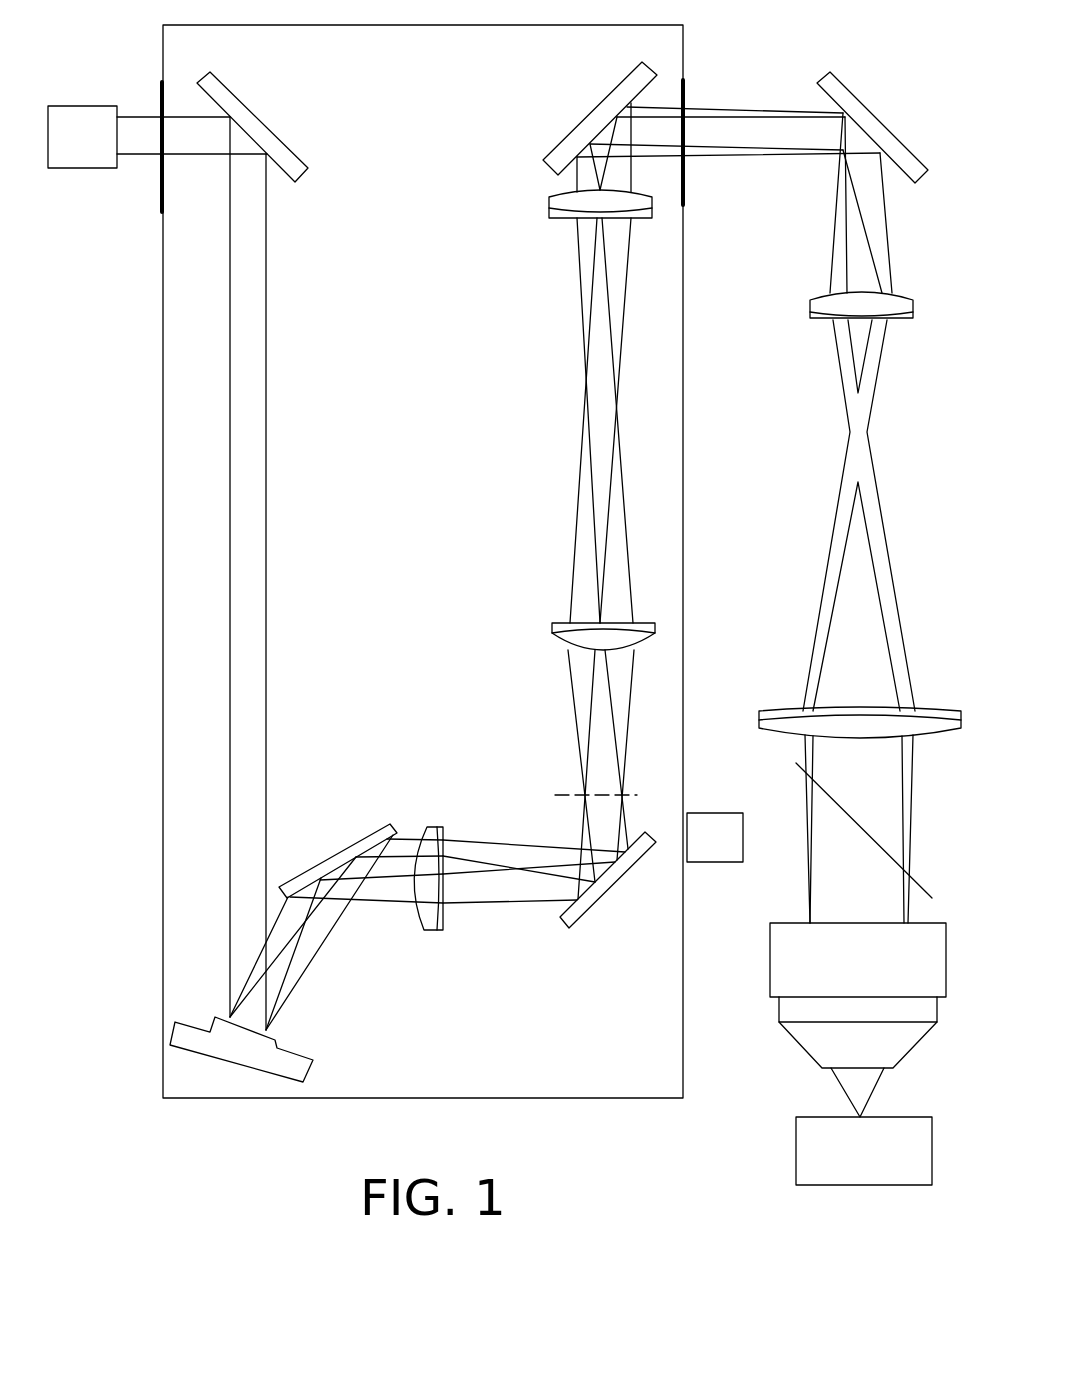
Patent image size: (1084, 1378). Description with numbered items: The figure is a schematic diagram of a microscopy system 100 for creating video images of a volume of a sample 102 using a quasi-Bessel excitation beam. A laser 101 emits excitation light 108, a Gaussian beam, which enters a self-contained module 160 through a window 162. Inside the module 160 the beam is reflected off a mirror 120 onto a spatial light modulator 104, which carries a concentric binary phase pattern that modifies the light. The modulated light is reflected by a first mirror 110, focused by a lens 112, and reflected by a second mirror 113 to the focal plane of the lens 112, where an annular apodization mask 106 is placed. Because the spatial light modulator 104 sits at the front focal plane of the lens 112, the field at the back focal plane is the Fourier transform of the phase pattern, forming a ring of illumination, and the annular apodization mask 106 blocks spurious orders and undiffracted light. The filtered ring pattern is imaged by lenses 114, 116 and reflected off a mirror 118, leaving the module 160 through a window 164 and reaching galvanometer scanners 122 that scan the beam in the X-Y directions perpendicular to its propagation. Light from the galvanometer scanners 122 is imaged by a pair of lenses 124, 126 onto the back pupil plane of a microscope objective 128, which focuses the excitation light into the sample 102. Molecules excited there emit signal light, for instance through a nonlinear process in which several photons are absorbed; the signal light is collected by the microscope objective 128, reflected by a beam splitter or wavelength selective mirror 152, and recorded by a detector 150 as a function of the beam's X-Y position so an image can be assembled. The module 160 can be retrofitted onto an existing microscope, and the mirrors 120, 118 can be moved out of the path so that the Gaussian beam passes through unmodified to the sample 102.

The microscopy system 100 is at (81, 23).
The laser 101 is at (65, 146).
The sample 102 is at (847, 1160).
The spatial light modulator 104 is at (278, 1042).
The annular apodization mask 106 is at (563, 793).
The excitation light 108 is at (143, 156).
The first mirror 110 is at (333, 856).
The lens 112 is at (423, 931).
The second mirror 113 is at (569, 929).
The lens 114 is at (551, 633).
The lens 116 is at (548, 206).
The mirror 118 is at (592, 110).
The mirror 120 is at (270, 127).
The galvanometer scanners 122 is at (872, 106).
The lens 124 is at (808, 306).
The lens 126 is at (762, 715).
The microscope objective 128 is at (768, 975).
The detector 150 is at (698, 846).
The wavelength selective mirror 152 is at (840, 808).
The self-contained module 160 is at (160, 440).
The window 162 is at (158, 97).
The window 164 is at (686, 92).